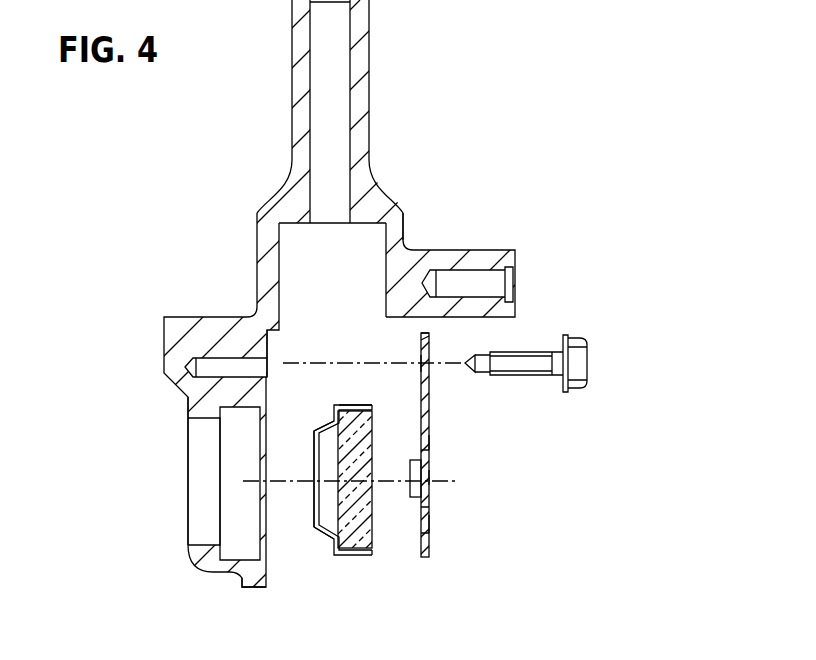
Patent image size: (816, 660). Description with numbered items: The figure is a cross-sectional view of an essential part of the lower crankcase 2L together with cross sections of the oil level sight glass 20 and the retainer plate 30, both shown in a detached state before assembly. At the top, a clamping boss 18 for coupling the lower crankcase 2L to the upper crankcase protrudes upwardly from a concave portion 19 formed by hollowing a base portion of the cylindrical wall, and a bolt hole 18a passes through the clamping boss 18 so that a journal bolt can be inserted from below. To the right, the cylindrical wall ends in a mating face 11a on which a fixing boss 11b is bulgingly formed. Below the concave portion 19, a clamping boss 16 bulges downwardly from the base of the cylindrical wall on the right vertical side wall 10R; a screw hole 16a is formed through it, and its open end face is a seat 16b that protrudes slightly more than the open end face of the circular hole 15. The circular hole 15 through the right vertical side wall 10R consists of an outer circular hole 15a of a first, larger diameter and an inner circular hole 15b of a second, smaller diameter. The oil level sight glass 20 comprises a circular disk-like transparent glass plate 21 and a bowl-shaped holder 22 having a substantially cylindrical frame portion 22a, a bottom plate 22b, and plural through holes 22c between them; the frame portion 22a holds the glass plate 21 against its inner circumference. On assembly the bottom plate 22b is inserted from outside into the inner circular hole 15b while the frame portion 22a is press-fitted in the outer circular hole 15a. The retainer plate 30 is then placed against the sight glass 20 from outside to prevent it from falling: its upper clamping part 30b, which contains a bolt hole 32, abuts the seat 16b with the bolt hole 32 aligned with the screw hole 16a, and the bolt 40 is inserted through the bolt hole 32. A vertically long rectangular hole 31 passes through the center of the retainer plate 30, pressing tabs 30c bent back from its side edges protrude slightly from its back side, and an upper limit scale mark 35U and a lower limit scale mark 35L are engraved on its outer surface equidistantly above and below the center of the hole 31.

The lower crankcase 2L is at (482, 148).
The right vertical side wall 10R is at (265, 577).
The mating face 11a is at (517, 262).
The fixing boss 11b is at (481, 250).
The circular hole 15 is at (85, 413).
The outer circular hole 15a is at (240, 434).
The inner circular hole 15b is at (211, 502).
The clamping boss 16 is at (216, 317).
The screw hole 16a is at (333, 344).
The seat 16b is at (268, 401).
The clamping boss 18 is at (368, 98).
The bolt hole 18a is at (334, 51).
The concave portion 19 is at (346, 291).
The oil level sight glass 20 is at (418, 563).
The transparent glass plate 21 is at (375, 530).
The holder 22 is at (353, 558).
The frame portion 22a is at (349, 406).
The bottom plate 22b is at (314, 484).
The through hole 22c is at (332, 428).
The retainer plate 30 is at (436, 548).
The clamping part 30b is at (431, 336).
The pressing tab 30c is at (410, 462).
The rectangular hole 31 is at (430, 477).
The bolt hole 32 is at (419, 362).
The upper limit scale mark 35U is at (431, 442).
The lower limit scale mark 35L is at (431, 525).
The bolt 40 is at (589, 362).